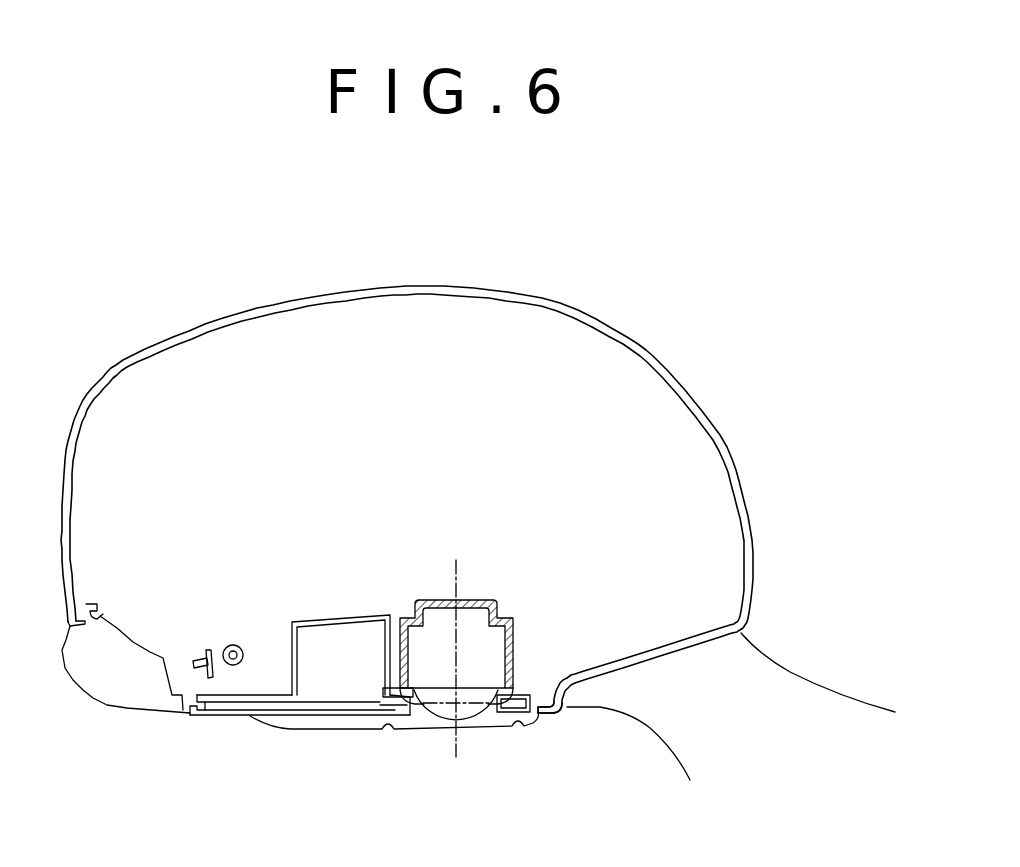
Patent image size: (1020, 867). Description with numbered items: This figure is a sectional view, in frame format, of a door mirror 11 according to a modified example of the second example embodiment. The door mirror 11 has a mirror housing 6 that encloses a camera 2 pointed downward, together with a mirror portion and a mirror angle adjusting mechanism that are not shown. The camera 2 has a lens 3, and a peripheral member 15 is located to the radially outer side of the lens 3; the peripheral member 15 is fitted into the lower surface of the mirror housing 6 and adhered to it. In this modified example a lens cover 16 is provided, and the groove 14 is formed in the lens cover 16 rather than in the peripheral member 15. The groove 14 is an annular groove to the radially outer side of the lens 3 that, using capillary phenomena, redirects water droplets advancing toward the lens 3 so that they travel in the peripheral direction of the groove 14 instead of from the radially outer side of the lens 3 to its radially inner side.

The door mirror 11 is at (436, 284).
The mirror housing 6 is at (625, 335).
The camera 2 is at (520, 645).
The lens 3 is at (468, 710).
The groove 14 is at (389, 735).
The peripheral member 15 is at (335, 720).
The lens cover 16 is at (547, 720).